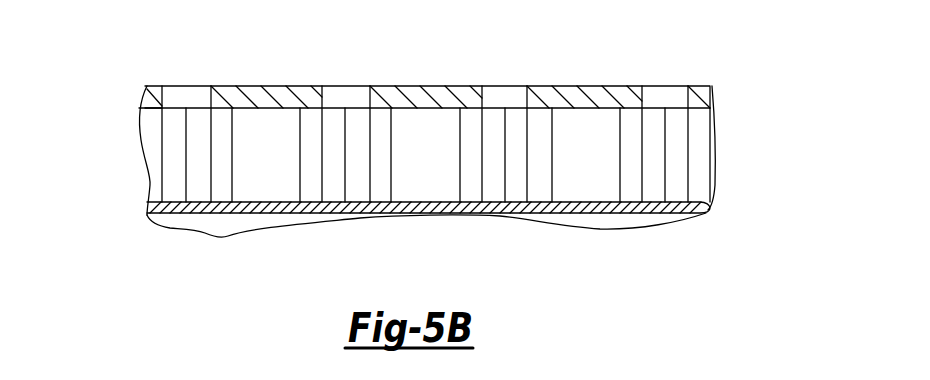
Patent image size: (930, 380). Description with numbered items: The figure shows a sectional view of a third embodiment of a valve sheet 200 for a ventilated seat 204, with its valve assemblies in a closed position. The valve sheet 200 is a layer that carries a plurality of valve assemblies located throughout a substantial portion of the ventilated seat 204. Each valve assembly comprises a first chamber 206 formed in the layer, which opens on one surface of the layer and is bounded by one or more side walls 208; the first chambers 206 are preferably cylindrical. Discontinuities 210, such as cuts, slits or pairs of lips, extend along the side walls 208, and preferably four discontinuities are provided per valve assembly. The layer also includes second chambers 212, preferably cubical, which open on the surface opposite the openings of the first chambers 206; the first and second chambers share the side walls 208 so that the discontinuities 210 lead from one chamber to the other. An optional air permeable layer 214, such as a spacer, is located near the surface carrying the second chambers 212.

The valve sheet 200 is at (98, 142).
The ventilated seat 204 is at (237, 232).
The first chambers 206 is at (652, 82).
The side walls 208 is at (164, 125).
The discontinuities 210 is at (187, 157).
The second chambers 212 is at (286, 160).
The air permeable layer 214 is at (707, 203).